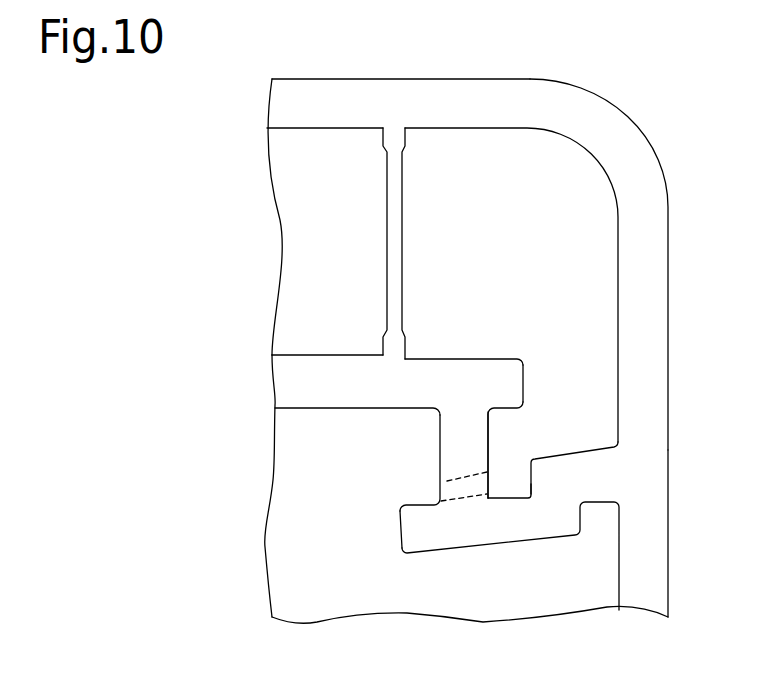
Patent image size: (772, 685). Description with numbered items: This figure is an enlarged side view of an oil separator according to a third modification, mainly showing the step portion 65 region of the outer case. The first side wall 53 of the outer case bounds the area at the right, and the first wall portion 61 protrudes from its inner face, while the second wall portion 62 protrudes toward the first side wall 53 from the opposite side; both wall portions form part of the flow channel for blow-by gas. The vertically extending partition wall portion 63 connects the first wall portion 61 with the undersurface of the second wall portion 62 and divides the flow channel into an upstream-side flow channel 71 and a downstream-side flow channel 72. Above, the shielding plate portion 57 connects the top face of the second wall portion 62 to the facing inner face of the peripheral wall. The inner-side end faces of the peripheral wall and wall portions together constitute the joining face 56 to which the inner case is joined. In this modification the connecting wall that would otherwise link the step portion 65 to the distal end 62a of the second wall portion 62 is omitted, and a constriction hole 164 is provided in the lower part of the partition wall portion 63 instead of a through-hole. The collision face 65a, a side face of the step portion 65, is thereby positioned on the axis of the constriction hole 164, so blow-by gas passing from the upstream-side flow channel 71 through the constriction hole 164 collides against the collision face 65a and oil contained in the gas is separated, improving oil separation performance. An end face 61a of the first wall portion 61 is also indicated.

The downstream-side flow channel 72 is at (300, 168).
The shielding plate portion 57 is at (383, 198).
The first side wall 53 is at (618, 231).
The second wall portion 62 is at (322, 353).
The partition wall portion 63 is at (428, 413).
The distal end 62a is at (518, 378).
The step portion 65 is at (517, 472).
The collision face 65a is at (528, 488).
The constriction hole 164 is at (447, 481).
The first wall portion 61 is at (505, 548).
The end surface of lower member 61a is at (412, 537).
The joining face 56 is at (660, 563).
The upstream-side flow channel 71 is at (298, 588).